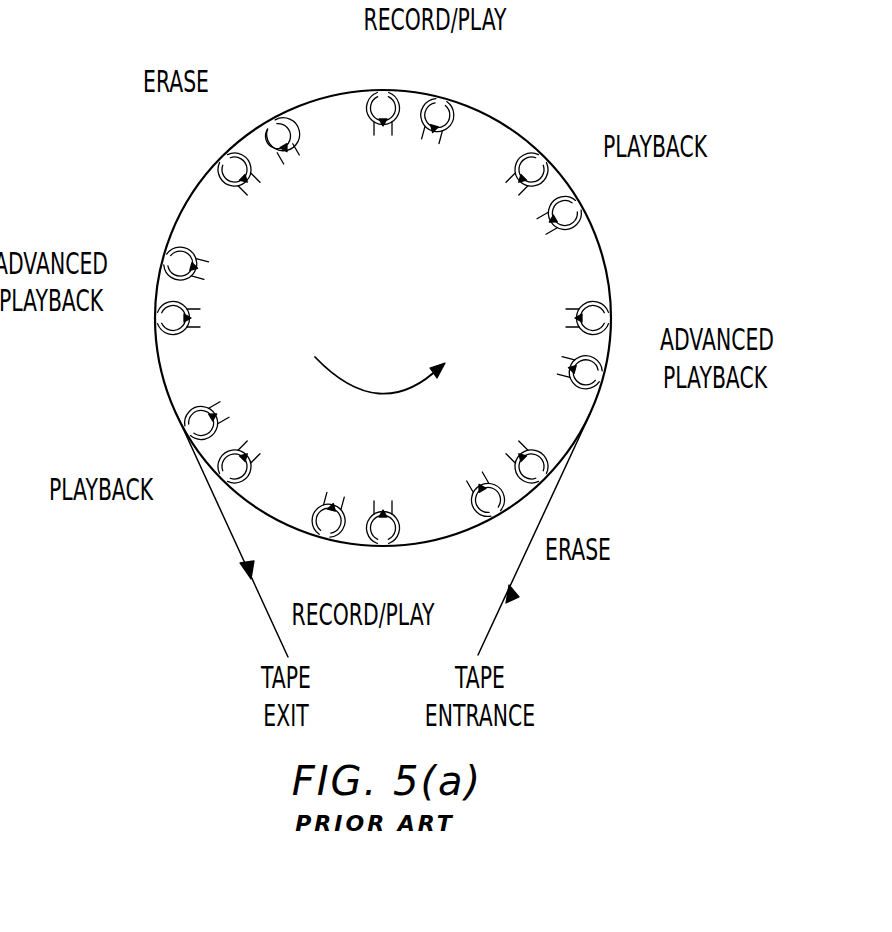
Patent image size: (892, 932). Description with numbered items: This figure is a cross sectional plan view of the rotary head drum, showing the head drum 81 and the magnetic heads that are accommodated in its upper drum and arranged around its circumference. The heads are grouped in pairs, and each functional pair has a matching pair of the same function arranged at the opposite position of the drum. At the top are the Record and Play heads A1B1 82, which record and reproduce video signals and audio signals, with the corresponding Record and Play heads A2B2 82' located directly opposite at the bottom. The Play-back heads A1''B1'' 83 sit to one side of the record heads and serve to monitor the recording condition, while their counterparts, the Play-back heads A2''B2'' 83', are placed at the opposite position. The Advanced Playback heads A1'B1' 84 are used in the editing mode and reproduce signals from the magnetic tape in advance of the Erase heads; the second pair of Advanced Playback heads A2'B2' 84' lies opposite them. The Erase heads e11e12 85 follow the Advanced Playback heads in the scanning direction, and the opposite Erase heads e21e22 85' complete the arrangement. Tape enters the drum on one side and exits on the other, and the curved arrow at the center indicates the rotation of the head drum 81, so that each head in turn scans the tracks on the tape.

The head drum 81 is at (377, 342).
The record and play heads A1B1 82 is at (412, 139).
The play-back heads A1''B1'' 83 is at (536, 197).
The advanced playback heads A1'B1' 84 is at (202, 283).
The erase heads e11e12 85 is at (248, 160).
The record and play heads A2B2 82' is at (352, 504).
The play-back heads A2''B2'' 83' is at (230, 454).
The advanced playback heads A2'B2' 84' is at (563, 352).
The erase heads e21e22 85' is at (521, 478).